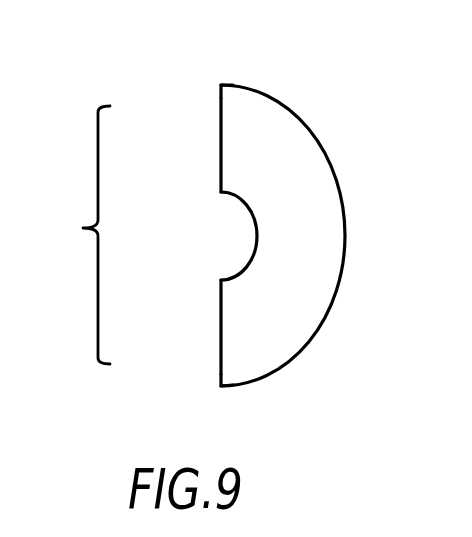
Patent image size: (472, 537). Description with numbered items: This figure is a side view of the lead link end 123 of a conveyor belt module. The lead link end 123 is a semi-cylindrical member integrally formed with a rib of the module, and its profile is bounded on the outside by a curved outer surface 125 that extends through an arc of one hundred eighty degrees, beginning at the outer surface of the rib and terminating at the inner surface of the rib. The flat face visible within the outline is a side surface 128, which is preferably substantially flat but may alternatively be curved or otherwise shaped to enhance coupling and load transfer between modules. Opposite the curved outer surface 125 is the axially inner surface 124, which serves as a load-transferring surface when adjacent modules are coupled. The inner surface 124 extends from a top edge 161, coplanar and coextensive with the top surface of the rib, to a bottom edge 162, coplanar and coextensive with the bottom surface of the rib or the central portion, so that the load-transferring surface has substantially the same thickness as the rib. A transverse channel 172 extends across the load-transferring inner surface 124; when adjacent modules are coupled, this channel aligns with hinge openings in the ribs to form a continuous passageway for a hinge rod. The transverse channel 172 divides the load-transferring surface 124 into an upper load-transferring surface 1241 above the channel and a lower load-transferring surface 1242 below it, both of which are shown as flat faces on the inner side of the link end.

The lead link end 123 is at (300, 58).
The curved outer surface 125 is at (313, 133).
The side surface 128 is at (290, 178).
The axially inner surface 124 is at (71, 235).
The upper load-transferring surface 1241 is at (220, 148).
The lower load-transferring surface 1242 is at (219, 320).
The transverse channel 172 is at (232, 226).
The top edge 161 is at (220, 84).
The bottom edge 162 is at (219, 391).